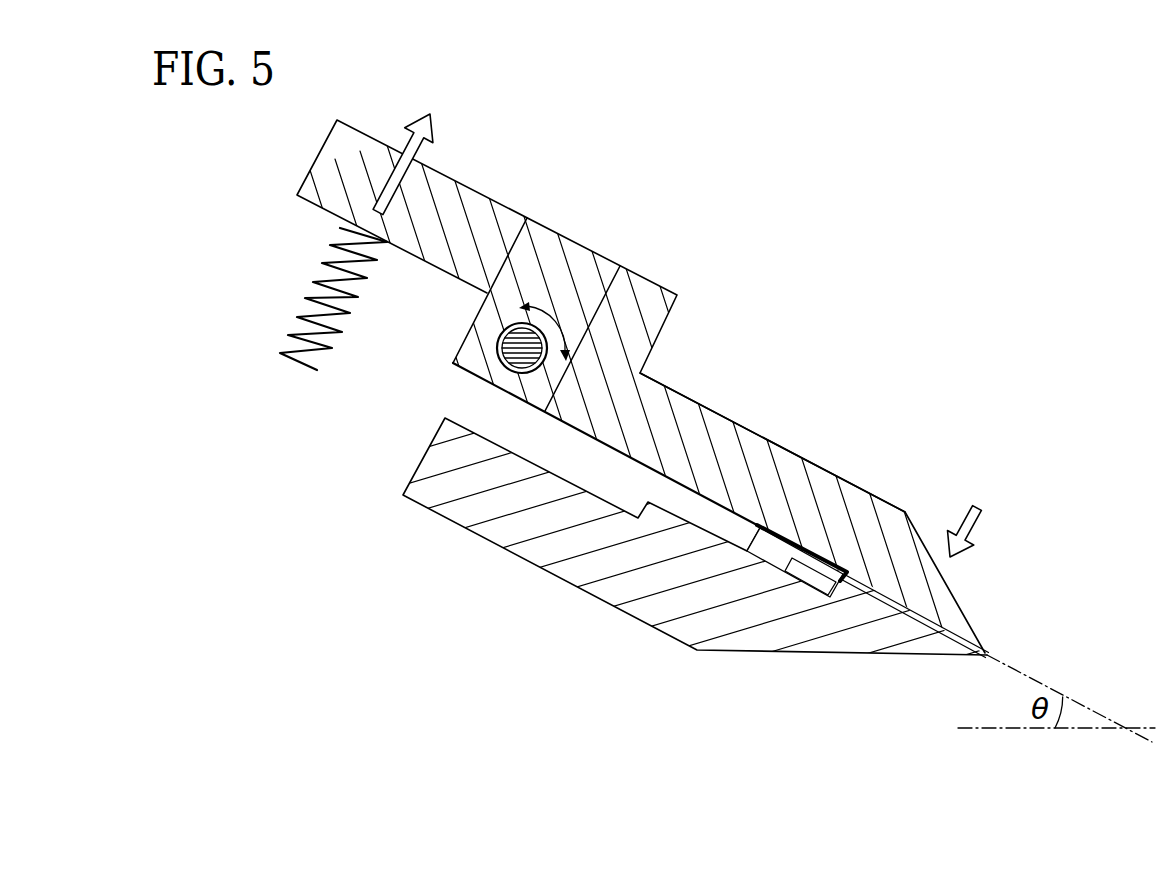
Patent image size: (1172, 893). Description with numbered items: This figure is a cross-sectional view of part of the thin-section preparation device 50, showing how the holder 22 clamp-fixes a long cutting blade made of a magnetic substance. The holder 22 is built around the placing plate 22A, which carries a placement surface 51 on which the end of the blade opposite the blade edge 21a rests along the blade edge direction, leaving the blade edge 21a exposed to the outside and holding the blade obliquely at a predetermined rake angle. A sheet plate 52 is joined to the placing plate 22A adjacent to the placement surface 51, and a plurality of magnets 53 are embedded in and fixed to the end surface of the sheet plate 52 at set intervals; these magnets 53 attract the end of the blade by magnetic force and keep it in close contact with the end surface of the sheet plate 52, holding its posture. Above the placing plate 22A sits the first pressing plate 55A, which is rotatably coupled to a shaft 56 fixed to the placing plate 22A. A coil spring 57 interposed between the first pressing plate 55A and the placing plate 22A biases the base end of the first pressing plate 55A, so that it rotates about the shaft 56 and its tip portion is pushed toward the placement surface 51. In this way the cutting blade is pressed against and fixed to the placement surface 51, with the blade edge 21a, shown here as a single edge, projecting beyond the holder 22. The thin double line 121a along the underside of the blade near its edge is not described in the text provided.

The thin-section preparation device 50 is at (1000, 155).
The holder 22 is at (828, 282).
The first pressing plate 55A is at (768, 450).
The shaft 56 is at (520, 350).
The coil spring 57 is at (333, 347).
The placing plate 22A is at (556, 562).
The placement surface 51 is at (877, 600).
The sheet plate 52 is at (773, 552).
The magnets 53 is at (817, 573).
The cutting edge surface 121a is at (917, 617).
The blade edge 21a is at (989, 657).